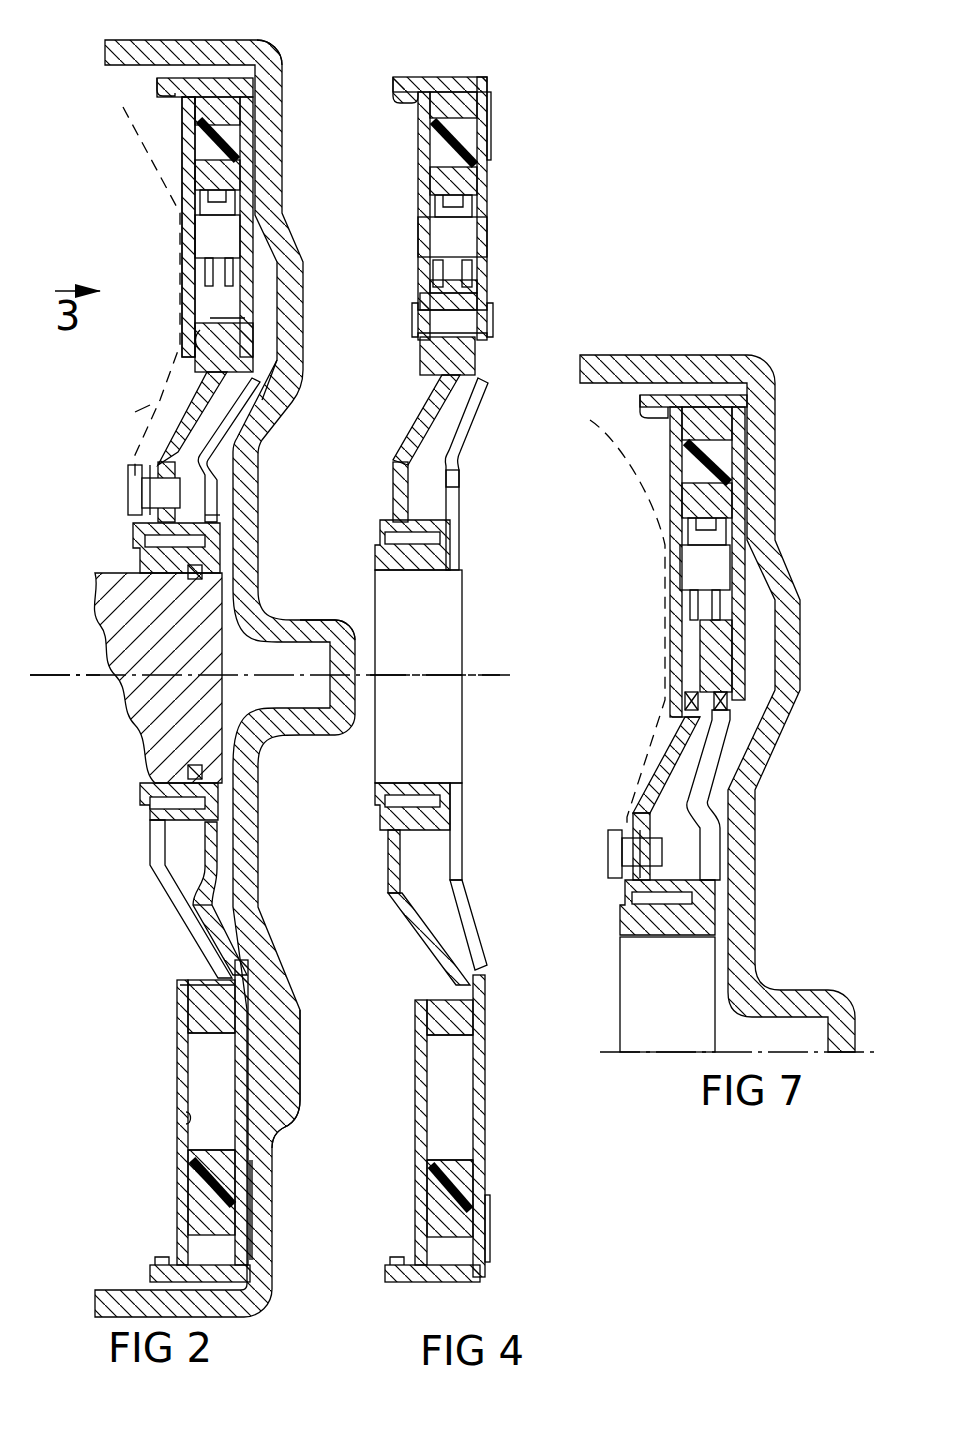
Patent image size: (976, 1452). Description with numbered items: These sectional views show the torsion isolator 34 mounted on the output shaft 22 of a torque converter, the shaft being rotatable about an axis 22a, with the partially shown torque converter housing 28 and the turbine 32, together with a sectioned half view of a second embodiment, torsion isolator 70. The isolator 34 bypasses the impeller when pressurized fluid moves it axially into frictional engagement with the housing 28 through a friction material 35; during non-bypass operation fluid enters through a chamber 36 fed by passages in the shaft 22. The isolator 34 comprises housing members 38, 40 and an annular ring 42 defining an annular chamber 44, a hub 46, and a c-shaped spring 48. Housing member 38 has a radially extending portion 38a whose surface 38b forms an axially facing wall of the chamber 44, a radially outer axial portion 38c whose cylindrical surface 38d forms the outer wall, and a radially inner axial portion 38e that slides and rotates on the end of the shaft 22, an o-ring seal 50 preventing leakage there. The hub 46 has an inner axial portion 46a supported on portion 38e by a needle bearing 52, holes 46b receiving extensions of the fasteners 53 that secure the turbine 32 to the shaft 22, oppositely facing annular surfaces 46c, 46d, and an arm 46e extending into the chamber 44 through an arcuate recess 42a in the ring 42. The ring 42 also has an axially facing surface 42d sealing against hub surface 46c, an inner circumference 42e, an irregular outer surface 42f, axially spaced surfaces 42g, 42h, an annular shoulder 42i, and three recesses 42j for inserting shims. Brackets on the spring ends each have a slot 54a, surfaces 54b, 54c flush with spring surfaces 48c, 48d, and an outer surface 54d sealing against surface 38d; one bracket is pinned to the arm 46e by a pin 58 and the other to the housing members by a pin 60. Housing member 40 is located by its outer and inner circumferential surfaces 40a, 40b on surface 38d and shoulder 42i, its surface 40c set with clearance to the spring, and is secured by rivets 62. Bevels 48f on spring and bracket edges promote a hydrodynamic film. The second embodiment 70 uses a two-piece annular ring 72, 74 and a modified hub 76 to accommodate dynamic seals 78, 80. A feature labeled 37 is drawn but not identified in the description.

In FIG. 2, the output shaft 22 is at (98, 606).
In FIG. 2, the axis 22a is at (92, 695).
In FIG. 2, the torque converter housing 28 is at (262, 972).
In FIG. 2, the turbine 32 is at (133, 415).
In FIG. 2, the torsion isolator 34 is at (143, 192).
In FIG. 4, the friction material 35 is at (490, 1240).
In FIG. 2, the chamber 36 is at (272, 288).
In FIG. 2, the fan blade root 37 is at (140, 412).
In FIG. 2, the housing member 38 is at (258, 1072).
In FIG. 2, the radially extending portion 38a is at (250, 1106).
In FIG. 2, the surface 38b is at (258, 1135).
In FIG. 2, the radially outer and axially extending portion 38c is at (152, 1275).
In FIG. 2, the cylindrical surface 38d is at (250, 1258).
In FIG. 2, the radially inner and axially extending portion 38e is at (142, 798).
In FIG. 2, the housing member 40 is at (182, 1068).
In FIG. 4, the outer circumferential surface 40a is at (410, 80).
In FIG. 4, the inner circumferential surface 40b is at (415, 345).
In FIG. 2, the axially facing surface 40c is at (190, 1118).
In FIG. 2, the annular ring 42 is at (185, 1020).
In FIG. 2, the arcuate opening or recess 42a is at (250, 345).
In FIG. 4, the axially facing annular surface 42d is at (470, 980).
In FIG. 4, the inner circumference 42e is at (425, 1000).
In FIG. 4, the outer circumferential surface 42f is at (448, 296).
In FIG. 2, the axially spaced apart surface 42g is at (205, 330).
In FIG. 2, the axially spaced apart surface 42h is at (283, 405).
In FIG. 4, the annular shoulder or ridge 42i is at (420, 360).
In FIG. 4, the recesses 42j is at (418, 1015).
In FIG. 2, the annular chamber 44 is at (192, 1090).
In FIG. 2, the hub 46 is at (158, 908).
In FIG. 2, the radially inner and axially extending portion 46a is at (215, 520).
In FIG. 4, the holes 46b is at (397, 490).
In FIG. 2, the annular surface 46c is at (185, 985).
In FIG. 2, the annular surface 46d is at (248, 975).
In FIG. 2, the arm 46e is at (220, 318).
In FIG. 2, the c-shaped spring 48 is at (192, 1142).
In FIG. 4, the axially facing surface 48c is at (430, 140).
In FIG. 4, the axially facing surface 48d is at (485, 165).
In FIG. 7, the chamfers or bevels 48f is at (715, 522).
In FIG. 2, the o-ring seal 50 is at (205, 775).
In FIG. 2, the needle bearing 52 is at (148, 548).
In FIG. 2, the fasteners 53 is at (128, 493).
In FIG. 4, the slot 54a is at (452, 270).
In FIG. 2, the axially facing surface 54b is at (178, 95).
In FIG. 2, the axially facing surface 54c is at (262, 72).
In FIG. 4, the radially outwardly facing surface 54d is at (465, 80).
In FIG. 2, the pin 58 is at (228, 232).
In FIG. 4, the pin 60 is at (478, 237).
In FIG. 4, the rivets 62 is at (478, 324).
In FIG. 7, the torsion isolator 70 is at (658, 545).
In FIG. 7, the annular ring piece 72 is at (672, 690).
In FIG. 7, the annular ring piece 74 is at (718, 668).
In FIG. 7, the hub 76 is at (673, 762).
In FIG. 7, the dynamic seal 78 is at (688, 700).
In FIG. 7, the dynamic seal 80 is at (728, 700).